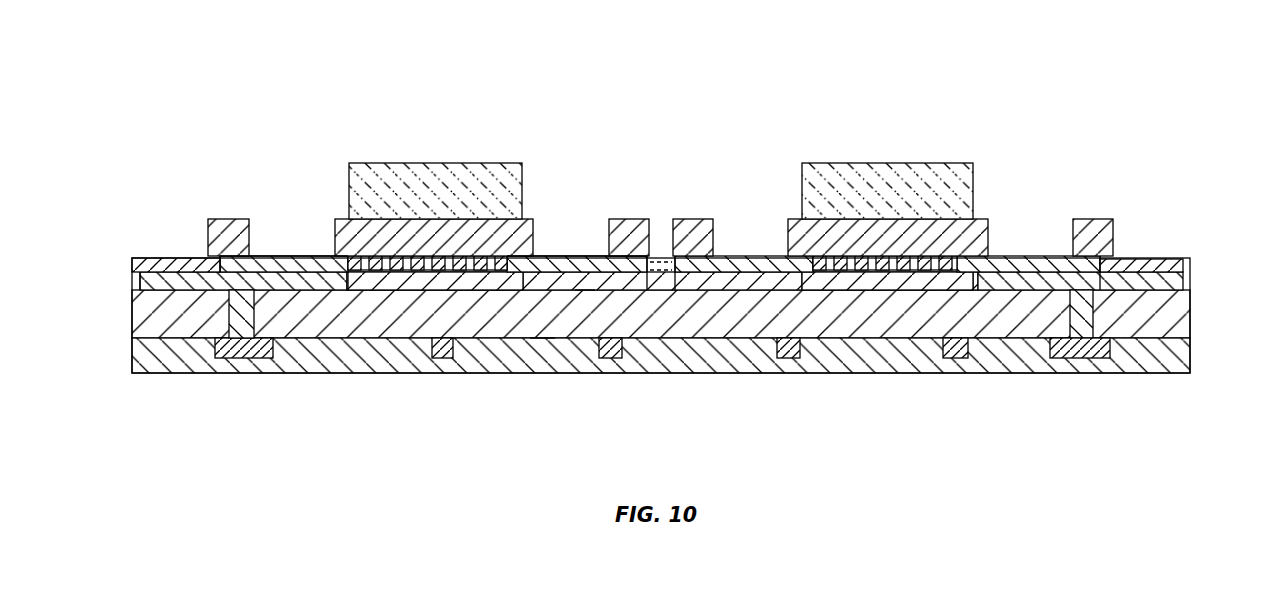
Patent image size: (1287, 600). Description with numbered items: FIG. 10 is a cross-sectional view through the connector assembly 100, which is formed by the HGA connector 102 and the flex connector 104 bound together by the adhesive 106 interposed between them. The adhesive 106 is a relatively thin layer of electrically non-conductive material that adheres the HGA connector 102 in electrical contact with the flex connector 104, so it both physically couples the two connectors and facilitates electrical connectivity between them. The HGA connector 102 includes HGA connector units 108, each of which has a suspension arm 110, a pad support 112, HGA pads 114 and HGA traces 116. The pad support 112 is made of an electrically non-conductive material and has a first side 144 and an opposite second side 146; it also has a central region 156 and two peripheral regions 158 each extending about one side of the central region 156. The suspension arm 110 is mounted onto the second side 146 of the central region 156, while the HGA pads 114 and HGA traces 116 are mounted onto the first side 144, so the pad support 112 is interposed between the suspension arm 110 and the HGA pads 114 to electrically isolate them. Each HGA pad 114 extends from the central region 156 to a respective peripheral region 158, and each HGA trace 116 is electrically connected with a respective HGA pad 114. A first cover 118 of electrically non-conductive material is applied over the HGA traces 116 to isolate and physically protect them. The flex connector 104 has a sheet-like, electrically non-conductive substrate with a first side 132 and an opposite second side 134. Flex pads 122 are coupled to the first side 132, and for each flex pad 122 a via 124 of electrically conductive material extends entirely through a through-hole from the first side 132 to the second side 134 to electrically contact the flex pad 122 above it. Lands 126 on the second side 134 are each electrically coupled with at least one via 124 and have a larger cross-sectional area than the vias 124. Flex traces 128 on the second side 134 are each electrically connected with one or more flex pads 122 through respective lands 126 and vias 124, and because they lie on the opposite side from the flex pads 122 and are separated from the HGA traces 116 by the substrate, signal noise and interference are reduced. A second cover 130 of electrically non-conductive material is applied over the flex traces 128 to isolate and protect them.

The connector assembly 100 is at (1103, 52).
The HGA connector 102 is at (1160, 216).
The flex connector 104 is at (1222, 340).
The adhesive 106 is at (163, 257).
The HGA connector unit 108 is at (322, 160).
The suspension arm 110 is at (485, 163).
The pad support 112 is at (336, 219).
The HGA pads 114 is at (293, 262).
The HGA traces 116 is at (377, 270).
The first cover 118 is at (360, 292).
The flex pads 122 is at (142, 270).
The vias 124 is at (232, 317).
The lands 126 is at (255, 357).
The flex traces 128 is at (620, 353).
The second cover 130 is at (172, 360).
The first side 132 is at (587, 289).
The second side 134 is at (538, 339).
The first side 144 is at (220, 256).
The second side 146 is at (432, 217).
The central region 156 is at (522, 240).
The peripheral regions 158 is at (213, 219).